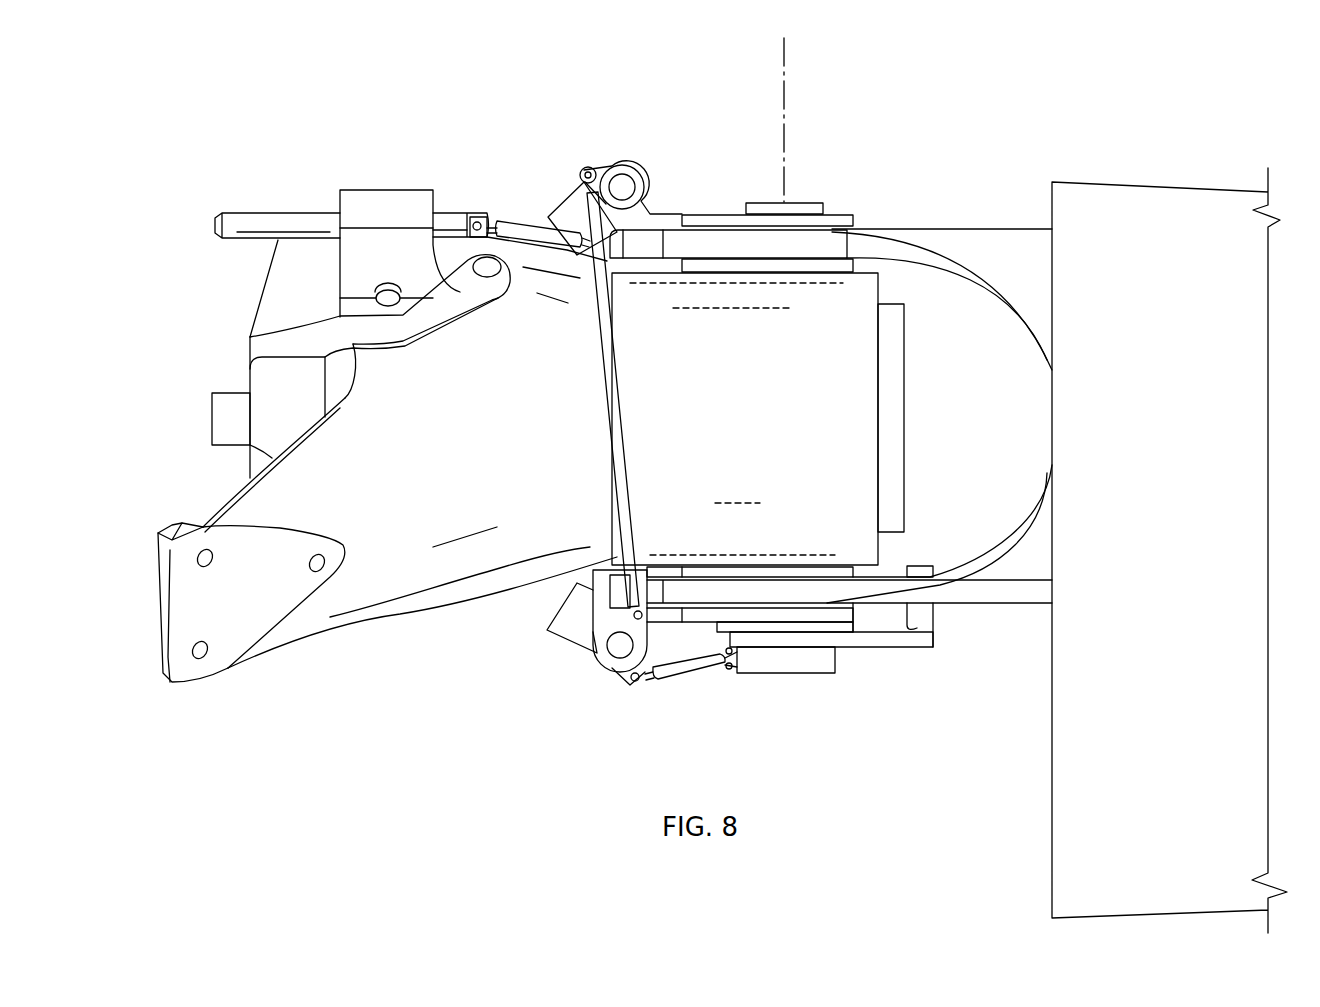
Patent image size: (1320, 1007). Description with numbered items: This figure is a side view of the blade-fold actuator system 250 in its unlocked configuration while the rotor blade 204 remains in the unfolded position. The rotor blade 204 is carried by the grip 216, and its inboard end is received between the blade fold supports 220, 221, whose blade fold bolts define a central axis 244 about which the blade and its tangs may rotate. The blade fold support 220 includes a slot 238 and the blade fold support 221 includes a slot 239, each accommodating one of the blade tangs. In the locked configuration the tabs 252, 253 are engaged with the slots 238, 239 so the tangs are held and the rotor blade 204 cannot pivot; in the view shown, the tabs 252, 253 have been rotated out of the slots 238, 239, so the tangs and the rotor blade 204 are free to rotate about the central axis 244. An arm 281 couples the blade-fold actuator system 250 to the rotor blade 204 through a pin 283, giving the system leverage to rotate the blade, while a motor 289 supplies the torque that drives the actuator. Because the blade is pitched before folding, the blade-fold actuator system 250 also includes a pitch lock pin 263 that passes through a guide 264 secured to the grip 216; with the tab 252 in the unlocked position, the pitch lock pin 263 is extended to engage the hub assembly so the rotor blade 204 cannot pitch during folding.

The rotor blade 204 is at (1158, 183).
The grip 216 is at (400, 620).
The blade fold support 220 is at (697, 213).
The blade fold support 221 is at (613, 672).
The slot 238 is at (727, 228).
The slot 239 is at (693, 623).
The central axis 244 is at (788, 122).
The blade-fold actuator system 250 is at (605, 487).
The tab 252 is at (562, 196).
The tab 253 is at (562, 640).
The pitch lock pin 263 is at (270, 213).
The guide 264 is at (383, 190).
The arm 281 is at (877, 647).
The pin 283 is at (933, 620).
The motor 289 is at (783, 673).